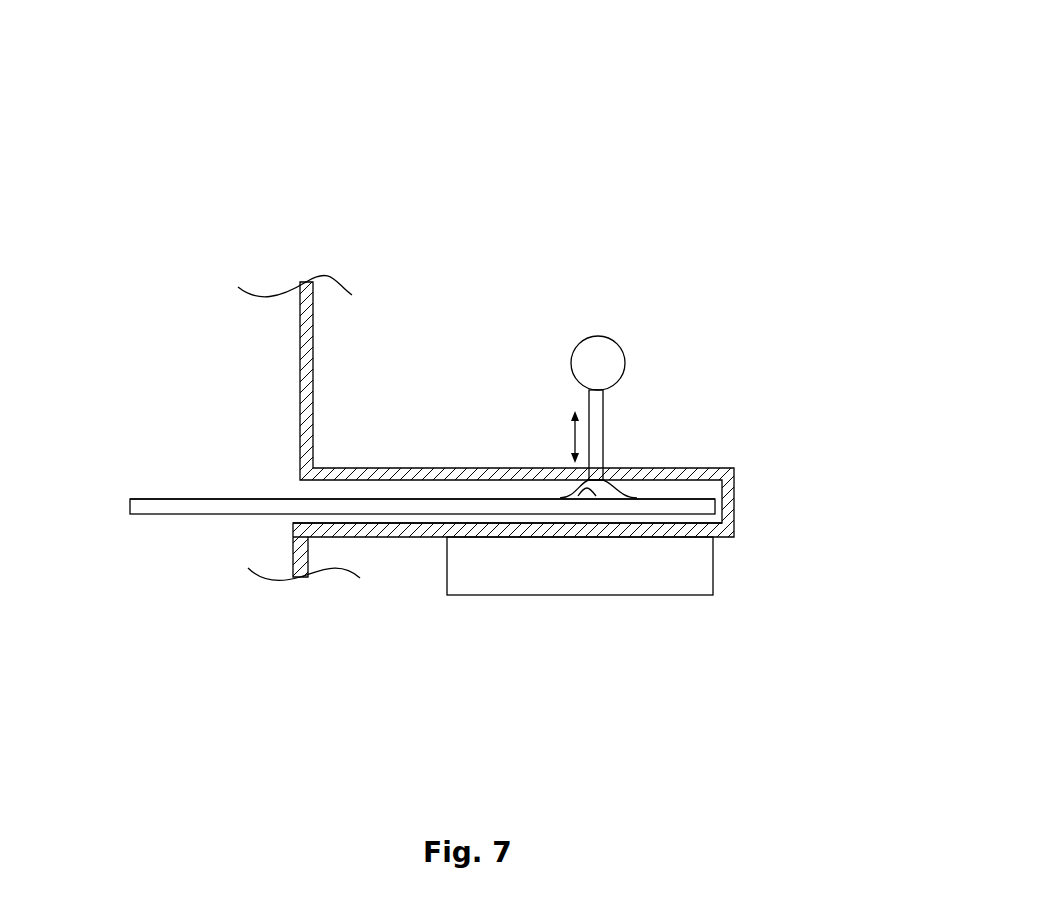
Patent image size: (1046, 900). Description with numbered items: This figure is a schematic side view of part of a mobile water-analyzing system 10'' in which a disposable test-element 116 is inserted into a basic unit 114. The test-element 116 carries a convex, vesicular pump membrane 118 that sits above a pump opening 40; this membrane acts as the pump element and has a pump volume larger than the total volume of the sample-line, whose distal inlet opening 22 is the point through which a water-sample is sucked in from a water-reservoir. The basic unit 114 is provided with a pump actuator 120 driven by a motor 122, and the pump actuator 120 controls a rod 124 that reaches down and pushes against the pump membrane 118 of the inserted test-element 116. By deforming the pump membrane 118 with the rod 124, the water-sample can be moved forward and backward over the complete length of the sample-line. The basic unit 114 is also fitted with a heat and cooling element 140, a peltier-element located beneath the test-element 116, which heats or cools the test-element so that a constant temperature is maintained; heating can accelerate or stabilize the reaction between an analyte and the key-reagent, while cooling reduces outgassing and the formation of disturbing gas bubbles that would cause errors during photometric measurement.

The mobile water-analyzing system 10'' is at (480, 377).
The basic unit 114 is at (268, 420).
The disposable test-element 116 is at (389, 516).
The pump actuator 120 is at (535, 421).
The motor 122 is at (606, 336).
The rod 124 is at (588, 488).
The pump membrane 118 is at (609, 478).
The inlet opening 22 is at (127, 507).
The pump opening 40 is at (572, 499).
The heat and cooling element 140 is at (692, 567).